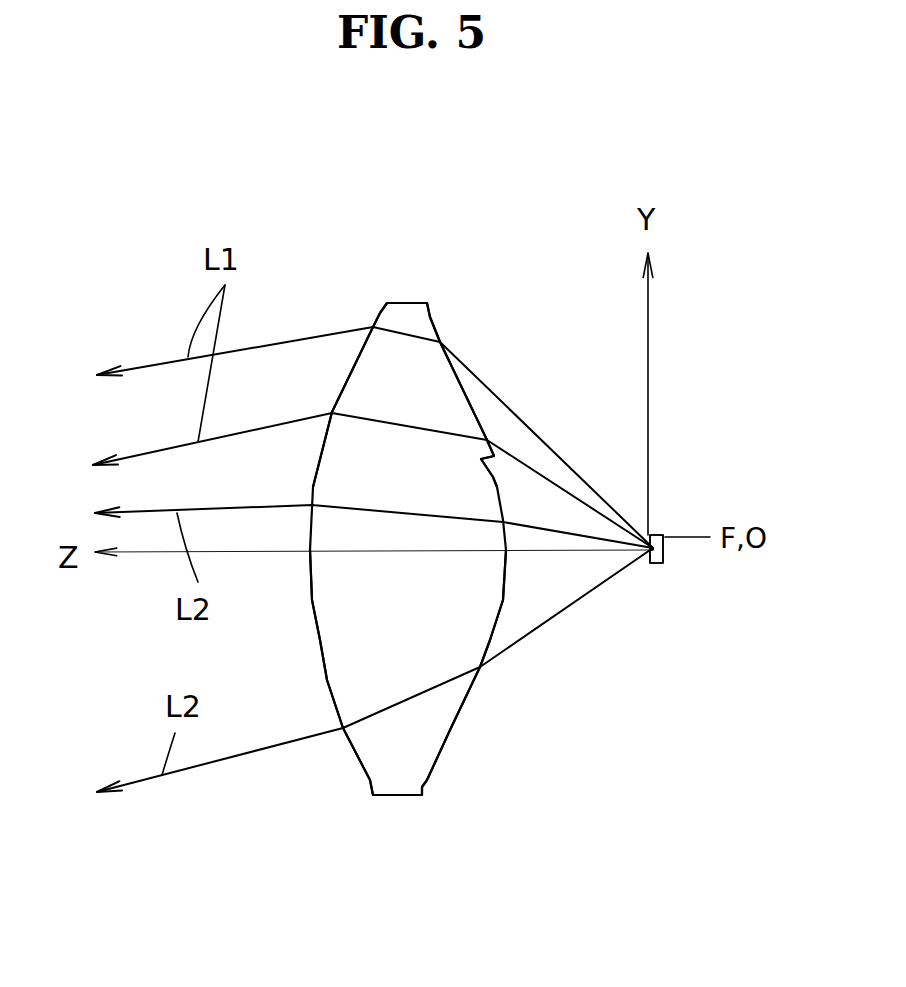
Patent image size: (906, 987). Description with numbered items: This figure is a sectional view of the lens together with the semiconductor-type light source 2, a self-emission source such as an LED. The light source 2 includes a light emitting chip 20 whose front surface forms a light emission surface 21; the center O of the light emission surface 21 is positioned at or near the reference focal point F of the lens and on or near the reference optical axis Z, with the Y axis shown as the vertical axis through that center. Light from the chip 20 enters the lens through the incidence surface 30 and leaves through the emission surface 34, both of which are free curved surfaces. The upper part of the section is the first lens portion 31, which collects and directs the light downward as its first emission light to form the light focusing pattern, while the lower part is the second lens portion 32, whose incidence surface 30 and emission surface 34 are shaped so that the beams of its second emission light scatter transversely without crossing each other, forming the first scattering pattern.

The semiconductor-type light source 2 is at (667, 520).
The light emitting chip 20 is at (660, 565).
The light emission surface 21 is at (648, 553).
The incidence surface 30 is at (432, 320).
The first lens portion 31 is at (343, 255).
The second lens portion 32 is at (313, 785).
The emission surface 34 is at (344, 525).